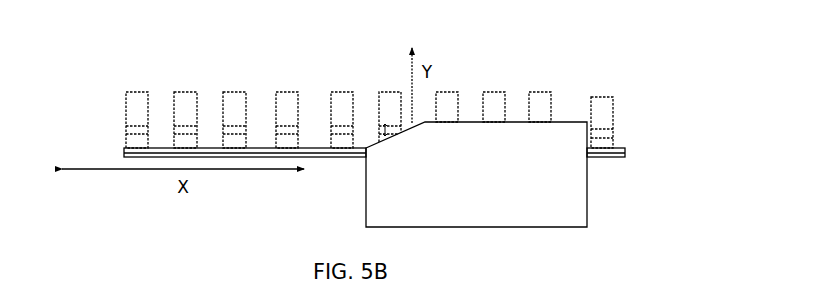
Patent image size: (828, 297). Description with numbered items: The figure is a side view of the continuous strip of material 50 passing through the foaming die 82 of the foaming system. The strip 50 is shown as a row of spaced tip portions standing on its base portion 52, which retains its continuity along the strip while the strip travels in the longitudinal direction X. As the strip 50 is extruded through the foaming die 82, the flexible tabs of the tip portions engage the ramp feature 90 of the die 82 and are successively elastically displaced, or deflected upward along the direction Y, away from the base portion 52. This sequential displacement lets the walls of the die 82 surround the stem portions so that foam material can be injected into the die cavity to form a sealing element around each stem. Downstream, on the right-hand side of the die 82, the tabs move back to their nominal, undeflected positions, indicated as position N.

The continuous strip of material 50 is at (168, 77).
The base portion 52 is at (122, 140).
The foaming die 82 is at (575, 195).
The ramp feature 90 is at (385, 136).
The position N is at (623, 112).